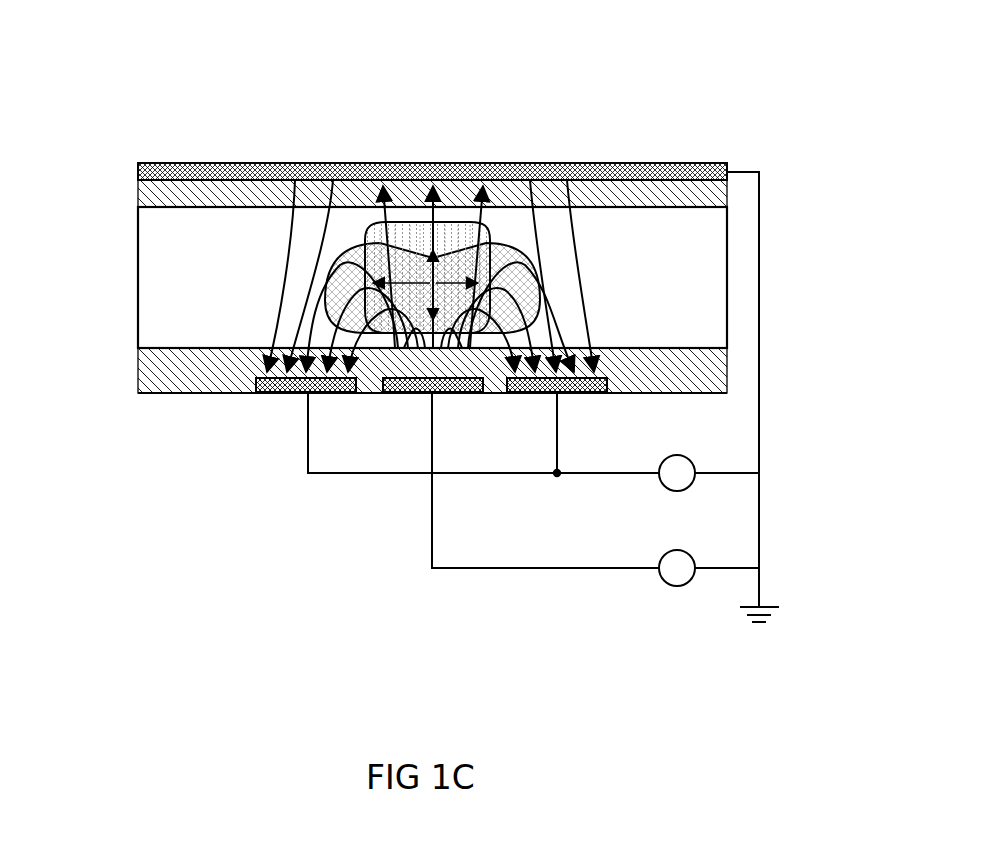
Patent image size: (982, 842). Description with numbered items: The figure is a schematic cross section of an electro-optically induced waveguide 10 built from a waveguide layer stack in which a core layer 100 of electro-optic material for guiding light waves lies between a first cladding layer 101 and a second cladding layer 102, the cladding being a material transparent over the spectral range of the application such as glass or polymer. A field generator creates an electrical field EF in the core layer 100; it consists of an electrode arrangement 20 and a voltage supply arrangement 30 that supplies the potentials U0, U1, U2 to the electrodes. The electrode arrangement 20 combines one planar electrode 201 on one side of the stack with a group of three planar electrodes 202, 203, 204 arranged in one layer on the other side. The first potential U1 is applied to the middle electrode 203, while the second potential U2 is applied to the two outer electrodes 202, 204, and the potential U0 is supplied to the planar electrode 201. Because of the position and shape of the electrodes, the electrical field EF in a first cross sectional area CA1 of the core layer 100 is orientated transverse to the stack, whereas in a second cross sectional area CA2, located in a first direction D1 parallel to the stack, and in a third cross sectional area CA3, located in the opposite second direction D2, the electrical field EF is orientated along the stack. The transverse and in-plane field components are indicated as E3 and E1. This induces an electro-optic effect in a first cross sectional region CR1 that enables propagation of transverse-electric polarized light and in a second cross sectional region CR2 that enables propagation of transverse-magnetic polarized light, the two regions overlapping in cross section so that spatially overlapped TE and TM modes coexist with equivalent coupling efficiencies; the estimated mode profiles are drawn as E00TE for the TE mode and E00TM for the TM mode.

The electro-optically induced waveguide 10 is at (128, 92).
The planar electrode 201 is at (137, 168).
The first cladding layer 101 is at (137, 197).
The core layer 100 is at (137, 280).
The second cladding layer 102 is at (138, 370).
The electrode arrangement 20 is at (120, 378).
The electrode 202 is at (270, 395).
The electrode 203 is at (400, 395).
The electrode 204 is at (594, 395).
The voltage supply arrangement 30 is at (777, 645).
The electrical field EF is at (285, 262).
The first cross sectional region CR1 is at (345, 236).
The second cross sectional region CR2 is at (452, 222).
The first cross sectional area CA1 is at (430, 147).
The second cross sectional area CA2 is at (543, 147).
The third cross sectional area CA3 is at (320, 147).
The TM fundamental mode field E00TM is at (497, 234).
The TE fundamental mode field E00TE is at (541, 288).
The vertical electric field component E3 is at (446, 276).
The horizontal electric field component E1 is at (439, 284).
The potential U0 is at (747, 165).
The first potential U1 is at (590, 573).
The second potential U2 is at (590, 478).
The first direction D1 is at (544, 690).
The second direction D2 is at (408, 690).